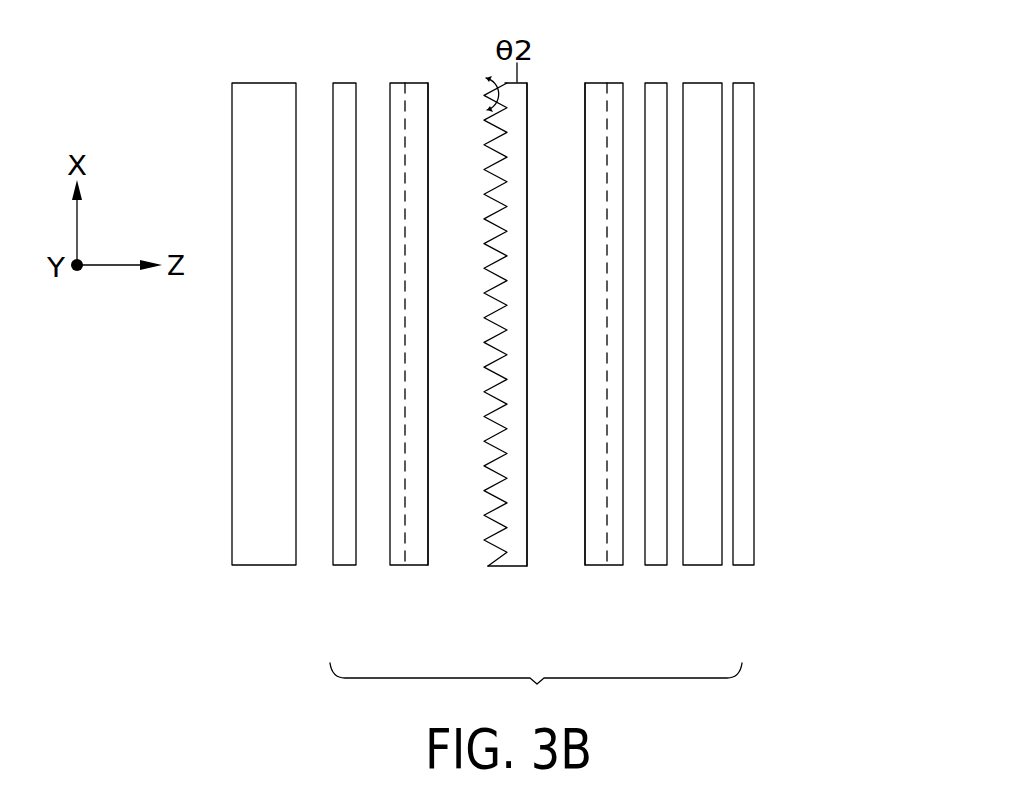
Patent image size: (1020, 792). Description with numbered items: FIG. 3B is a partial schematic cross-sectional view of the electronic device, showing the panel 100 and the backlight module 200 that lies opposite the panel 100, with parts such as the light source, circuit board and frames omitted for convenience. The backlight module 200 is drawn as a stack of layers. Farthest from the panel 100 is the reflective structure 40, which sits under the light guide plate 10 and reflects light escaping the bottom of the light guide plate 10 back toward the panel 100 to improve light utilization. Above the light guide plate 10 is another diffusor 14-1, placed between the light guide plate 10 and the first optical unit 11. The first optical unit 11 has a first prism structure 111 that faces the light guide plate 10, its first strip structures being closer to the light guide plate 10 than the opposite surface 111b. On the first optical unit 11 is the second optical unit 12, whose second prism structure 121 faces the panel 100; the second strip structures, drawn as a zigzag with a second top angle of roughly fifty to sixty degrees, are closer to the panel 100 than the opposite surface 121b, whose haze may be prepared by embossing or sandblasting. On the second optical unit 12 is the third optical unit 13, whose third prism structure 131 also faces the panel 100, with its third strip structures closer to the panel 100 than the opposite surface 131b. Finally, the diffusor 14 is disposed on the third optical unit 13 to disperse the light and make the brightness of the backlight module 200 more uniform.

The panel 100 is at (262, 565).
The diffusor 14 is at (343, 565).
The third optical unit 13 is at (415, 565).
The third prism structure 131 is at (404, 565).
The surface 131b is at (428, 115).
The second optical unit 12 is at (512, 566).
The second prism structure 121 is at (495, 557).
The surface 121b is at (528, 100).
The first optical unit 11 is at (600, 565).
The first prism structure 111 is at (612, 565).
The first surface of fourth layer 111b is at (585, 100).
The diffusor 14-1 is at (652, 565).
The light guide plate 10 is at (702, 565).
The reflective structure 40 is at (742, 565).
The backlight module 200 is at (536, 693).